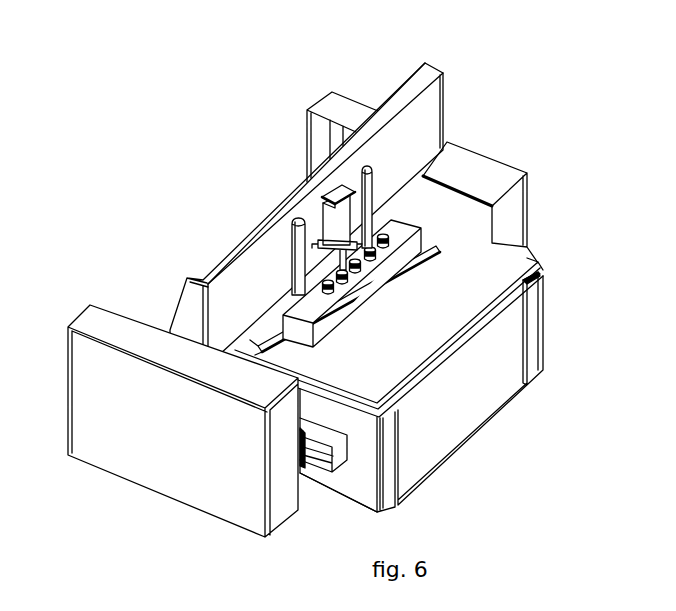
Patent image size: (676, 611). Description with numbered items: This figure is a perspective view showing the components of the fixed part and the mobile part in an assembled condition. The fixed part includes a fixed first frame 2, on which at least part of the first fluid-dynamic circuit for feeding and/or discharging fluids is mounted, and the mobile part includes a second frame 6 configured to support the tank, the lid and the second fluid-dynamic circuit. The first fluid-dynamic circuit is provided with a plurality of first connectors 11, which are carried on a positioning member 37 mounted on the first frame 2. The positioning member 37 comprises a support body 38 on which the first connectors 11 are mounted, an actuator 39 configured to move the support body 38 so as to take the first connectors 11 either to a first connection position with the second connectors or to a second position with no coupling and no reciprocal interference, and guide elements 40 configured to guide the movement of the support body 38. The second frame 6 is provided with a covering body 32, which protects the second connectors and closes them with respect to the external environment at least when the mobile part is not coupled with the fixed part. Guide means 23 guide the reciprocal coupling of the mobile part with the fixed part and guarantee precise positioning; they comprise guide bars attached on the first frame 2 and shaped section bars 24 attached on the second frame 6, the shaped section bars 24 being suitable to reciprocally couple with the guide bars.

The first frame 2 is at (332, 103).
The second frame 6 is at (540, 333).
The first connectors 11 is at (387, 232).
The guide means 23 is at (315, 478).
The shaped section bar 24 is at (329, 459).
The covering body 32 is at (389, 287).
The positioning member 37 is at (333, 190).
The support body 38 is at (303, 312).
The actuator 39 is at (330, 219).
The guide elements 40 is at (369, 188).